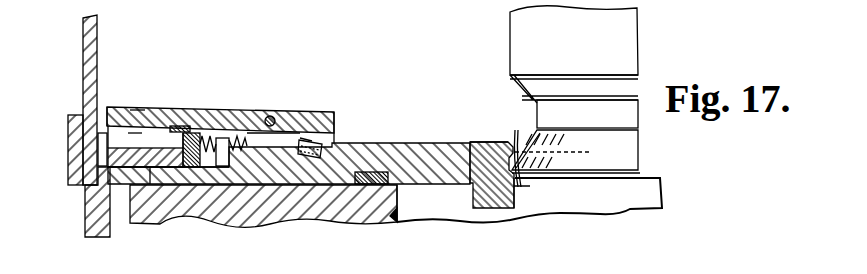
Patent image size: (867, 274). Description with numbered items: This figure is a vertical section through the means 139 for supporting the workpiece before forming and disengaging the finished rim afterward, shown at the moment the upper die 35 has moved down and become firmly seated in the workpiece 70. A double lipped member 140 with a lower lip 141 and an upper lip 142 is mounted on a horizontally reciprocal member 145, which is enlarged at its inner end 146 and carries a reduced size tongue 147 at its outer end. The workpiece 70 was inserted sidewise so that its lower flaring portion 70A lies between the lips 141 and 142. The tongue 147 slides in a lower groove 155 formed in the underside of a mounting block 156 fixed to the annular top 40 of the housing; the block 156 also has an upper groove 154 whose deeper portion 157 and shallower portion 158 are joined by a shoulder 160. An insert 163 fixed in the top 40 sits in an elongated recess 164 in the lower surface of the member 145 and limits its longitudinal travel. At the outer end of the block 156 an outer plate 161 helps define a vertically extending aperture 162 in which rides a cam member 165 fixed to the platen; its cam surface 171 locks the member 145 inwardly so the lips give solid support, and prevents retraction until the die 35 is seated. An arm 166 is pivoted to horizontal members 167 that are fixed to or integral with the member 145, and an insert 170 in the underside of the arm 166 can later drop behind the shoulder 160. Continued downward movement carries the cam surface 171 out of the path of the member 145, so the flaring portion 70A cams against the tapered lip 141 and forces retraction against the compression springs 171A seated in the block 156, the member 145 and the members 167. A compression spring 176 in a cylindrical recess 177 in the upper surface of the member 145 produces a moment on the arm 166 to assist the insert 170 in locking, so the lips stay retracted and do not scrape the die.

The upper die 35 is at (630, 43).
The annular top 40 is at (243, 218).
The workpiece 70 is at (628, 146).
The lower flaring portion 70A is at (580, 180).
The disengaging means 139 is at (362, 86).
The double lipped member 140 is at (491, 142).
The lower lip 141 is at (519, 187).
The upper lip 142 is at (515, 147).
The horizontally reciprocal member 145 is at (362, 142).
The enlarged inner end 146 is at (445, 142).
The tongue 147 is at (187, 184).
The upper groove 154 is at (135, 132).
The lower groove 155 is at (150, 172).
The mounting block 156 is at (137, 110).
The deeper portion 157 is at (107, 117).
The shallower portion 158 is at (198, 127).
The shoulder 160 is at (178, 140).
The outer plate 161 is at (67, 133).
The vertically extending aperture 162 is at (103, 153).
The insert 163 is at (382, 203).
The elongated recess 164 is at (392, 187).
The cam member 165 is at (98, 44).
The arm 166 is at (240, 107).
The horizontal members 167 is at (323, 111).
The insert 170 is at (182, 126).
The cam surface 171 is at (112, 203).
The compression springs 171A is at (233, 160).
The compression spring 176 is at (302, 139).
The cylindrical recess 177 is at (323, 155).